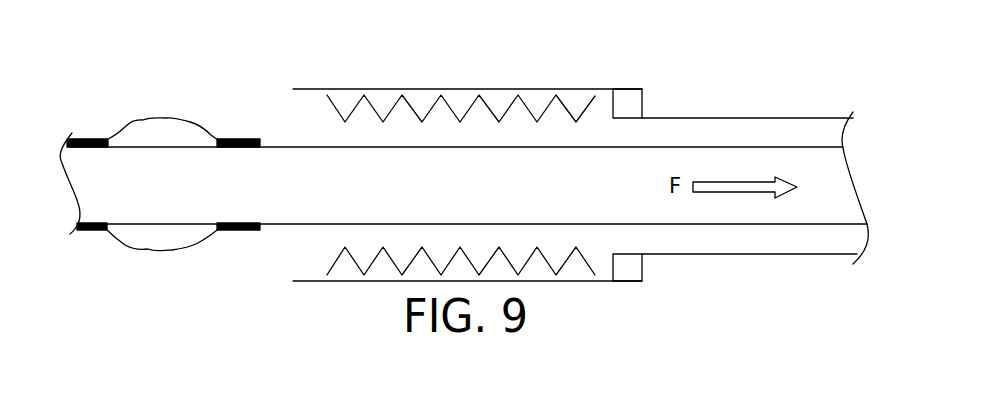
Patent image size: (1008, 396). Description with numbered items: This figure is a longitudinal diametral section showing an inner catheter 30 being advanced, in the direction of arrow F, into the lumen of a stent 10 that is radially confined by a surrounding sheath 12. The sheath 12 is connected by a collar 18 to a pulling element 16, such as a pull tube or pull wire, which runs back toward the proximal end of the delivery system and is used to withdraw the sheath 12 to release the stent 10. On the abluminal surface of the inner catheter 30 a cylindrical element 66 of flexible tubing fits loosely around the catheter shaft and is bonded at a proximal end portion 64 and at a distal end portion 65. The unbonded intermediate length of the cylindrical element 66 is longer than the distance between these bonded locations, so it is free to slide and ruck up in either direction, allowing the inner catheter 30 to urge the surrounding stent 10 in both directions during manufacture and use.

The stent 10 is at (511, 102).
The sheath 12 is at (580, 89).
The pulling element 16 is at (778, 118).
The collar 18 is at (627, 89).
The inner catheter 30 is at (612, 148).
The proximal end portion 64 is at (237, 139).
The distal end portion 65 is at (93, 139).
The cylindrical element 66 is at (148, 117).